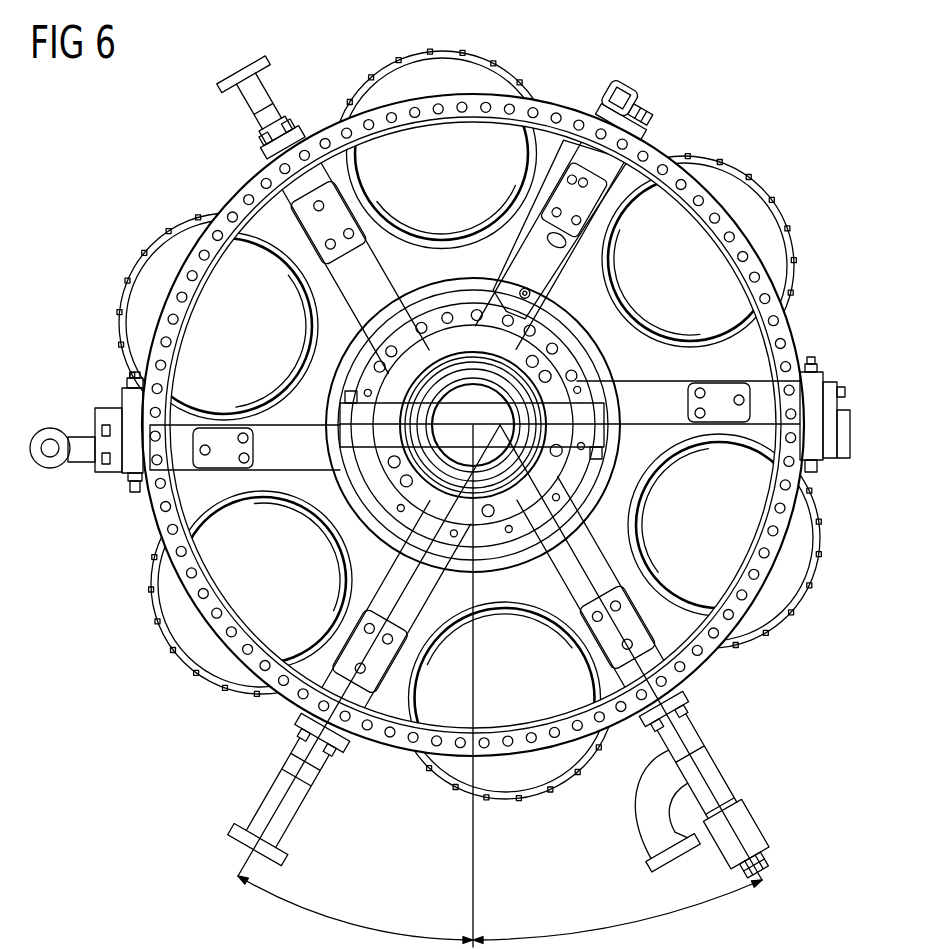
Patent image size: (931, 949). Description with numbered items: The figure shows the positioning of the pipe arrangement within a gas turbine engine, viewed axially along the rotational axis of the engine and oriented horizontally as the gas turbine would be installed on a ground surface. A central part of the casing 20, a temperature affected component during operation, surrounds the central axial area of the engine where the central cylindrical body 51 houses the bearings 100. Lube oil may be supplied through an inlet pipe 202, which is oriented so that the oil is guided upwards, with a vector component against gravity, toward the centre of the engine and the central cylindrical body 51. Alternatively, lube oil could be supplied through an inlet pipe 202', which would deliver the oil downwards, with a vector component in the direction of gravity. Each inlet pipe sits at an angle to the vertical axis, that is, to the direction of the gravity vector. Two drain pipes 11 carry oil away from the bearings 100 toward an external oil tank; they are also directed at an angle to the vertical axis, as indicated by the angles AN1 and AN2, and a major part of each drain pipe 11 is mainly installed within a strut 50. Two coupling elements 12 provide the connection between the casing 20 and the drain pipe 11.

The casing 20 is at (190, 492).
The strut 50 is at (372, 286).
The central cylindrical body 51 is at (597, 356).
The bearings 100 is at (530, 470).
The drain pipe 11 is at (270, 807).
The coupling element 12 is at (297, 755).
The inlet pipe 202 is at (790, 849).
The inlet pipe 202' is at (240, 109).
The angle AN1 is at (348, 918).
The angle AN2 is at (630, 925).